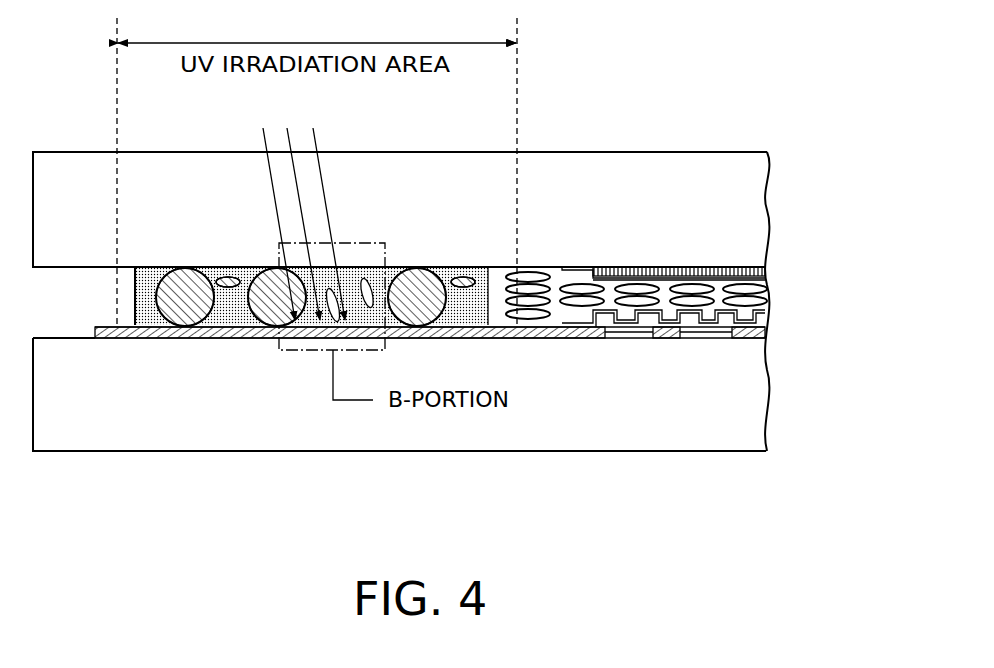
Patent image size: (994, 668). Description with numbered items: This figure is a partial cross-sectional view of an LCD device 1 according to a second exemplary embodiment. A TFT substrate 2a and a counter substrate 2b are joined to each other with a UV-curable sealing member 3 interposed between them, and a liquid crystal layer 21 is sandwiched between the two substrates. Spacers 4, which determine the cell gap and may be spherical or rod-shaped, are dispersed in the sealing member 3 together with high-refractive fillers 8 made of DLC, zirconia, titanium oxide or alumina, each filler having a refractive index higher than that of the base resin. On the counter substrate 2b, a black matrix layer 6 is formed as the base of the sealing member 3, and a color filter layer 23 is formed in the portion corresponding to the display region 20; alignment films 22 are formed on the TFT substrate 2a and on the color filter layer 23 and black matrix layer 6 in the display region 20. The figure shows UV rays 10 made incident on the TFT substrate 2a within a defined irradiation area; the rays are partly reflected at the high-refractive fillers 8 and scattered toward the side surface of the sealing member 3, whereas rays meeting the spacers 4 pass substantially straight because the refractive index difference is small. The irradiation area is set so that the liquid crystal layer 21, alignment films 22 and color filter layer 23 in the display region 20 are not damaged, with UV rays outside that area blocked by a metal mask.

The LCD device 1 is at (368, 536).
The TFT substrate 2a is at (750, 180).
The counter substrate 2b is at (750, 378).
The UV-curable sealing member 3 is at (487, 267).
The spacers 4 is at (418, 268).
The black matrix layer 6 is at (588, 338).
The high-refractive fillers 8 is at (463, 278).
The UV rays 10 is at (315, 140).
The display region 20 is at (712, 267).
The liquid crystal layer 21 is at (732, 312).
The alignment films 22 is at (750, 278).
The color filter layer 23 is at (702, 338).